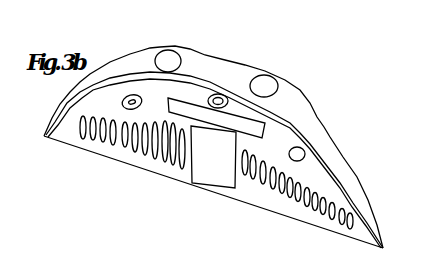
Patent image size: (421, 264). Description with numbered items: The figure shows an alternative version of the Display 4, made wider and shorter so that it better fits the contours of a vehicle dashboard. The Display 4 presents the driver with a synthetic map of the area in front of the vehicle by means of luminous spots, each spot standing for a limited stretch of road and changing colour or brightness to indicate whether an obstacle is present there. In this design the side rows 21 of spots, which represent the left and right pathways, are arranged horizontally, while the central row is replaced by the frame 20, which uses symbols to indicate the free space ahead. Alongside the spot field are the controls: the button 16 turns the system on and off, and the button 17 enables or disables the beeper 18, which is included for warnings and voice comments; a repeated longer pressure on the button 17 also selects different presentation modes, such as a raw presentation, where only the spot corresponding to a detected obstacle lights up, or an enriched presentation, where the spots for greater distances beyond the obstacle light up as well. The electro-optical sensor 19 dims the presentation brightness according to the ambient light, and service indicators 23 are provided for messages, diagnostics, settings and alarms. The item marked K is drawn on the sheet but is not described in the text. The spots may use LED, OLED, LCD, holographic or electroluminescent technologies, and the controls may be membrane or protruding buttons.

The Display 4 is at (157, 176).
The button 16 is at (264, 86).
The button 17 is at (168, 62).
The beeper 18 is at (131, 95).
The electro-optical sensor 19 is at (223, 94).
The frame 20 is at (302, 86).
The side rows 21 is at (287, 182).
The service indicators 23 is at (215, 143).
The marking K is at (305, 150).